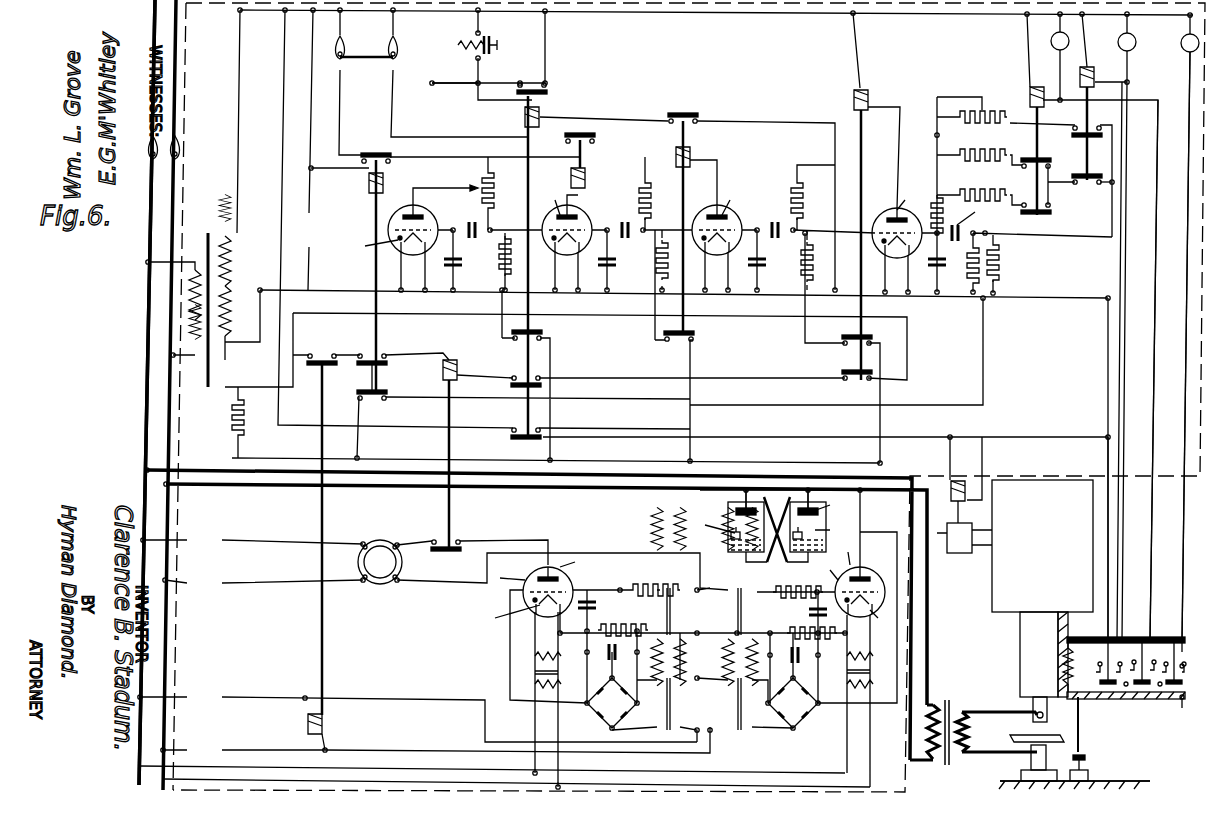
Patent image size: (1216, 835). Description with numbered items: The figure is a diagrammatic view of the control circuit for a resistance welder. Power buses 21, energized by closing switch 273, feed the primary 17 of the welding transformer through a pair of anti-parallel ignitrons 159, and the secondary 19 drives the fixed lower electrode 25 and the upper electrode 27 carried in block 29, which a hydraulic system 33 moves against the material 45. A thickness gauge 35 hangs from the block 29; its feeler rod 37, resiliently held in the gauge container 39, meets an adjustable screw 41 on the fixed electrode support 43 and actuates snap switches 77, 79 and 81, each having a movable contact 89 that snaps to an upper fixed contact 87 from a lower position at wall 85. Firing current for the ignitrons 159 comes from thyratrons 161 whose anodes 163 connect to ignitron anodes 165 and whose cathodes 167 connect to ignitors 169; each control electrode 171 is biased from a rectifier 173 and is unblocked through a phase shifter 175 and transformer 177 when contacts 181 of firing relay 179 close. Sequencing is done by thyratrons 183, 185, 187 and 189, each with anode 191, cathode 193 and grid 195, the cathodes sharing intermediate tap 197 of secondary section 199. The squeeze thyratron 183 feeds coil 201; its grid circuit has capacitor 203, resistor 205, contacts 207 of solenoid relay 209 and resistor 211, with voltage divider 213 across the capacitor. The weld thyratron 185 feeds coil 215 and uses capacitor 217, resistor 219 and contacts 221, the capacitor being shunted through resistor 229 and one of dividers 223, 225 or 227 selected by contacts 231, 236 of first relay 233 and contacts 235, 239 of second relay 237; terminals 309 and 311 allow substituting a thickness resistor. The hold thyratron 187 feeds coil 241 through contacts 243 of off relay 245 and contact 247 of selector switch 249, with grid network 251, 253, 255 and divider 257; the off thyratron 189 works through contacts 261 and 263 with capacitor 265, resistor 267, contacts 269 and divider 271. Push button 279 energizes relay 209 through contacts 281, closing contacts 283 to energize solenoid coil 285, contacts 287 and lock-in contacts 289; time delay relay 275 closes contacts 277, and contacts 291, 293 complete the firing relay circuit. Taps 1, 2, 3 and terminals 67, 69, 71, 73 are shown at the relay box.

The power buses 21 is at (160, 97).
The switch 273 is at (184, 148).
The secondary section 199 is at (211, 277).
The intermediate tap 197 is at (232, 290).
The resistor 211 is at (232, 417).
The contact of selector switch 263 is at (345, 38).
The contact of selector switch 247 is at (374, 67).
The repeat-non-repeat selector switch 249 is at (446, 67).
The push button 279 is at (492, 33).
The normally open contacts of solenoid relay 289 is at (550, 92).
The welder solenoid relay 209 is at (513, 266).
The normally closed contacts of squeeze relay 261 is at (370, 140).
The squeeze relay exciting coil 201 is at (369, 183).
The voltage divider 213 is at (470, 188).
The capacitor 203 is at (480, 225).
The squeeze thyratron 183 is at (388, 230).
The cathode 193 is at (365, 244).
The resistor 205 is at (495, 282).
The off relay 245 is at (561, 164).
The normally closed contacts of off relay 243 is at (598, 126).
The off thyratron 189 is at (575, 205).
The anode 191 is at (634, 201).
The voltage divider 271 is at (636, 187).
The capacitor 265 is at (633, 222).
The resistor 267 is at (665, 238).
The normally closed contacts of hold relay 281 is at (683, 110).
The hold relay exciting coil 241 is at (676, 160).
The hold thyratron 187 is at (725, 205).
The voltage divider 257 is at (770, 192).
The capacitor 251 is at (783, 222).
The resistor 253 is at (805, 238).
The welding relay exciting coil 215 is at (873, 223).
The grid 195 is at (880, 215).
The weld thyratron 185 is at (912, 199).
The terminal 311 is at (936, 184).
The voltage divider 227 is at (993, 110).
The voltage divider 223 is at (985, 160).
The resistor 229 is at (980, 192).
The voltage divider 225 is at (969, 215).
The capacitor 217 is at (963, 226).
The resistor 219 is at (1000, 278).
The first relay 233 is at (1040, 137).
The second relay 237 is at (1095, 115).
The normally open contacts of second relay 239 is at (1092, 128).
The normally closed contacts of first relay 231 is at (1058, 150).
The normally closed contacts of second relay 235 is at (1088, 178).
The terminal 309 is at (1108, 185).
The normally open contacts of first relay 236 is at (1045, 215).
The terminal 2 is at (1060, 41).
The terminal 3 is at (1127, 42).
The terminal 1 is at (1190, 43).
The normally closed contacts of solenoid relay 207 is at (545, 330).
The normally closed contacts of hold relay 269 is at (696, 331).
The contacts of time delay relay 277 is at (320, 360).
The normally open contacts of squeeze relay 291 is at (386, 355).
The normally closed contacts of squeeze relay 221 is at (372, 400).
The firing relay 179 is at (442, 370).
The normally open contacts of solenoid relay 287 is at (511, 386).
The normally open contacts of solenoid relay 283 is at (512, 440).
The normally closed contacts of weld relay 255 is at (845, 346).
The normally closed contacts of weld relay 293 is at (852, 380).
The welder solenoid coil 285 is at (965, 478).
The phase shifter 175 is at (380, 551).
The contacts of firing relay 181 is at (452, 538).
The time delay relay 275 is at (296, 730).
The ignitrons 159 is at (830, 516).
The ignitron anode 165 is at (836, 502).
The ignitor 169 is at (763, 526).
The thyratron anode 163 is at (708, 552).
The firing thyratrons 161 is at (885, 560).
The control electrode 171 is at (660, 568).
The thyratron cathode 167 is at (683, 615).
The transformer 177 is at (707, 618).
The rectifier 173 is at (600, 712).
The hydraulic system 33 is at (992, 585).
The block 29 is at (1020, 647).
The control box 67 is at (1096, 630).
The snap switch 81 is at (1115, 663).
The snap switch 77 is at (1149, 663).
The upper fixed contact 87 is at (1146, 671).
The movable contact 89 is at (1180, 665).
The thickness gauge 35 is at (1191, 651).
The snap switch 79 is at (1190, 666).
The front wall 85 is at (1190, 696).
The gauge container 39 is at (1172, 708).
The conductor 69 is at (1125, 612).
The conductor 71 is at (1155, 590).
The conductor 73 is at (1186, 592).
The upper welding electrode 27 is at (1048, 713).
The material to be welded 45 is at (1013, 735).
The lower welding electrode 25 is at (1030, 758).
The feeler rod 37 is at (1082, 735).
The adjustable screw 41 is at (1086, 758).
The fixed electrode support 43 is at (1150, 785).
The primary 17 is at (935, 770).
The secondary 19 is at (962, 712).